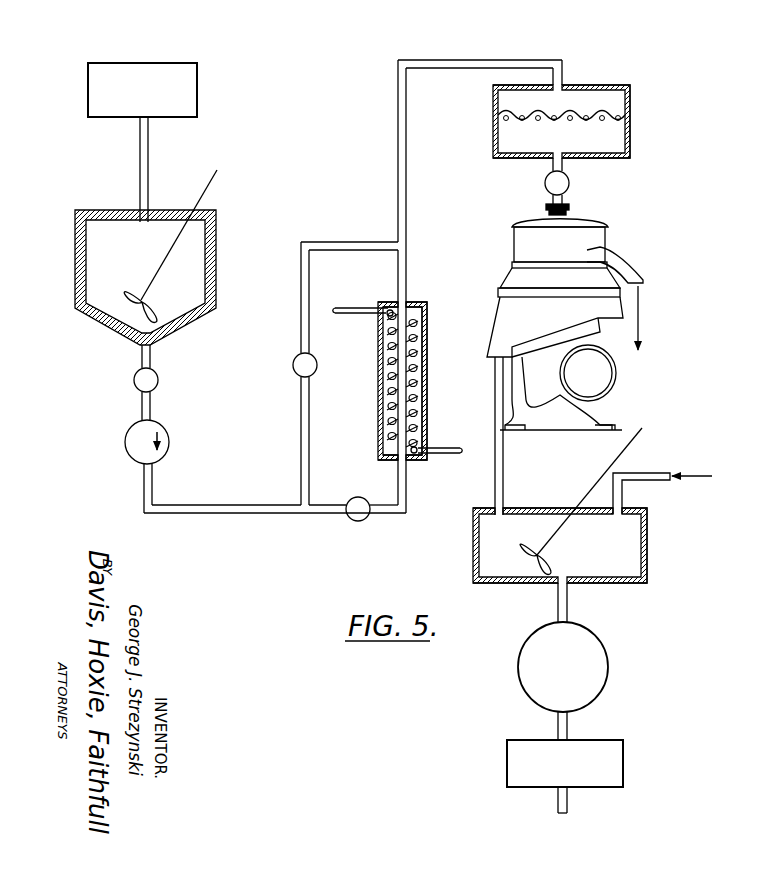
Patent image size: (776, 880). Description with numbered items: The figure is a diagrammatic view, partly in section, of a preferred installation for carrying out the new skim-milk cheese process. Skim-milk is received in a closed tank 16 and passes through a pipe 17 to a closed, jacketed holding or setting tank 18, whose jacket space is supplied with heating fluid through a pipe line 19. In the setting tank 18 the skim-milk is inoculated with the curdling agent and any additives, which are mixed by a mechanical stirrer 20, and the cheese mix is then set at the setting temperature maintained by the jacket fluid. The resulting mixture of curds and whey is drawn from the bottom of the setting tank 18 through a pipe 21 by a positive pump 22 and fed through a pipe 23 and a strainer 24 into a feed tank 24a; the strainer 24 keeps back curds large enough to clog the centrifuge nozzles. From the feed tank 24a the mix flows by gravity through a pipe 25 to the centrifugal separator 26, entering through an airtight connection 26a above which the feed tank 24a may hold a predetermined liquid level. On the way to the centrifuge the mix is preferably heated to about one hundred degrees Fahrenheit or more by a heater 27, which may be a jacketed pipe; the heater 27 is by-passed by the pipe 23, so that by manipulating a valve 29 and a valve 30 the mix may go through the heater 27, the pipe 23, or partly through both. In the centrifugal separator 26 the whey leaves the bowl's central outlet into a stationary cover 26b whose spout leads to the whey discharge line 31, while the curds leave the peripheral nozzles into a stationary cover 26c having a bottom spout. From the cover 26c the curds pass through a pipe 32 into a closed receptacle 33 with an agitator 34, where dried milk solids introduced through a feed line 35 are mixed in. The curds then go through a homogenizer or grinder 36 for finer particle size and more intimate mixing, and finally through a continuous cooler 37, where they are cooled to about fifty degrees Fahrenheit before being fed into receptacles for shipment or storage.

The closed tank 16 is at (197, 97).
The pipe 17 is at (148, 165).
The holding or setting tank 18 is at (216, 268).
The pipe line 19 is at (220, 222).
The mechanical stirrer 20 is at (217, 172).
The pipe 21 is at (150, 365).
The positive pump 22 is at (165, 430).
The pipe 23 is at (301, 445).
The strainer 24 is at (590, 112).
The feed tank 24a is at (493, 133).
The pipe 25 is at (398, 162).
The centrifugal separator 26 is at (530, 392).
The airtight connection 26a is at (569, 207).
The stationary cover 26b is at (607, 240).
The stationary cover 26c is at (487, 340).
The heater 27 is at (378, 395).
The valve 29 is at (293, 363).
The valve 30 is at (356, 521).
The whey discharge line 31 is at (640, 318).
The pipe 32 is at (503, 466).
The closed receptacle 33 is at (647, 545).
The agitator 34 is at (633, 447).
The feed line 35 is at (638, 481).
The homogenizer or grinder 36 is at (608, 660).
The cooler 37 is at (623, 770).